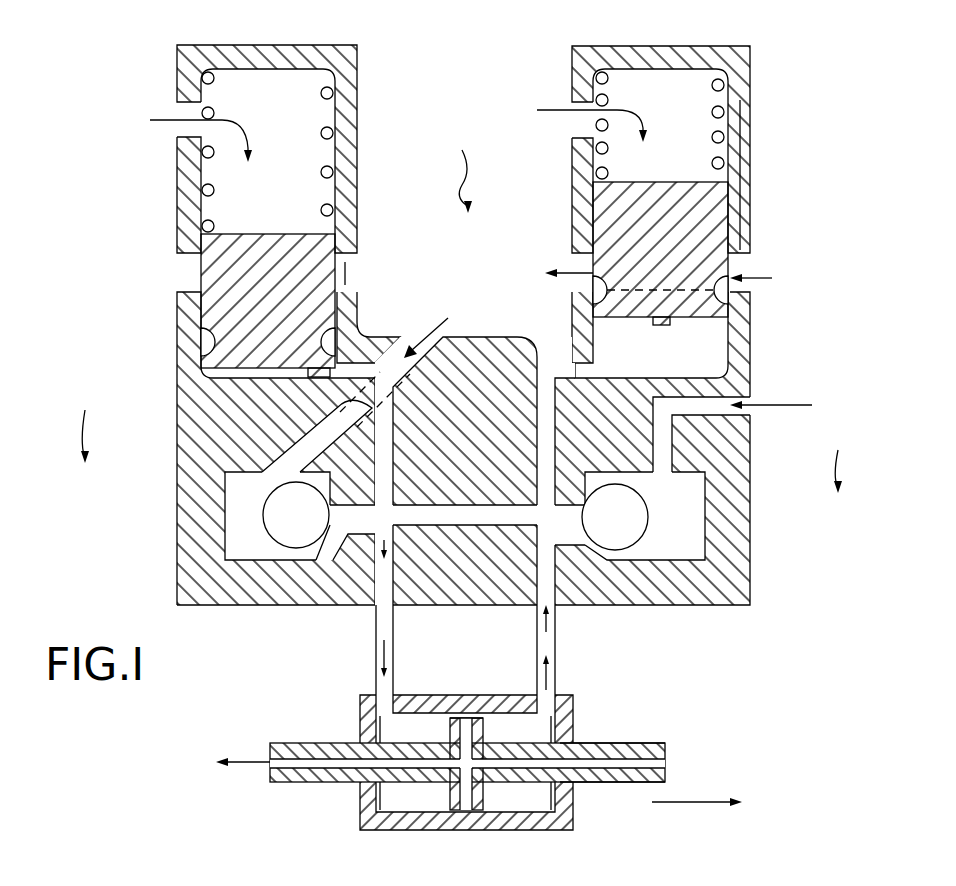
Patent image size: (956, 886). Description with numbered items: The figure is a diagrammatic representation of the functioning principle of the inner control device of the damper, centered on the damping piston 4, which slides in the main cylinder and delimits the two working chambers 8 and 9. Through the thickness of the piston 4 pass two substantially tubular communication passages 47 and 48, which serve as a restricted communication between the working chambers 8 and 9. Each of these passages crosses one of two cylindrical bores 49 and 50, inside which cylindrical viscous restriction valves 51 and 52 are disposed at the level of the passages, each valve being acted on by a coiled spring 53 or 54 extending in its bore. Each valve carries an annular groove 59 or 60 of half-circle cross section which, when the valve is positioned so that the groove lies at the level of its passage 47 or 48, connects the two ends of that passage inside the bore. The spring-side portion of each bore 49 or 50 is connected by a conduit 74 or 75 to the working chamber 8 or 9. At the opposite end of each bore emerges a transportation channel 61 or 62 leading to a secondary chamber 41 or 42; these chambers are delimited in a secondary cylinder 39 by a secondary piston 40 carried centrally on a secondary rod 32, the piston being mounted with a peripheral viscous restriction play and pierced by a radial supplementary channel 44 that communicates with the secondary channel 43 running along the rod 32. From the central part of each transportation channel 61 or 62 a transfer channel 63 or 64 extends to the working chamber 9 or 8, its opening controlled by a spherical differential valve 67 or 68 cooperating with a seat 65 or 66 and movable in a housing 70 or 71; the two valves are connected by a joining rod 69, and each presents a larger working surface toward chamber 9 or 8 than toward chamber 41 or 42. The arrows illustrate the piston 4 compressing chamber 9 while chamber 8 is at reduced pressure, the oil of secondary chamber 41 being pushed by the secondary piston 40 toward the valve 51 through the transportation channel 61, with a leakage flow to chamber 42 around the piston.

The damping piston 4 is at (740, 578).
The working chamber 8 is at (463, 169).
The working chamber 9 is at (464, 435).
The secondary rod 32 is at (605, 783).
The secondary cylinder 39 is at (566, 830).
The secondary piston 40 is at (452, 716).
The secondary chamber 41 is at (520, 800).
The secondary chamber 42 is at (396, 800).
The secondary channel 43 is at (323, 763).
The supplementary channel 44 is at (465, 810).
The communication passage 47 is at (577, 268).
The communication passage 48 is at (350, 268).
The cylindrical bore 49 is at (670, 70).
The cylindrical bore 50 is at (278, 73).
The viscous restriction valve 51 is at (727, 212).
The viscous restriction valve 52 is at (215, 332).
The coiled spring 53 is at (752, 128).
The coiled spring 54 is at (332, 135).
The groove 59 is at (744, 292).
The groove 60 is at (374, 337).
The transportation channel 61 is at (540, 388).
The transportation channel 62 is at (394, 407).
The transfer channel 63 is at (705, 468).
The transfer channel 64 is at (270, 456).
The seat 65 is at (588, 540).
The seat 66 is at (372, 540).
The differential valve 67 is at (627, 525).
The differential valve 68 is at (270, 532).
The joining rod 69 is at (438, 526).
The housing 70 is at (705, 520).
The housing 71 is at (233, 513).
The conduit 74 is at (575, 125).
The conduit 75 is at (186, 112).